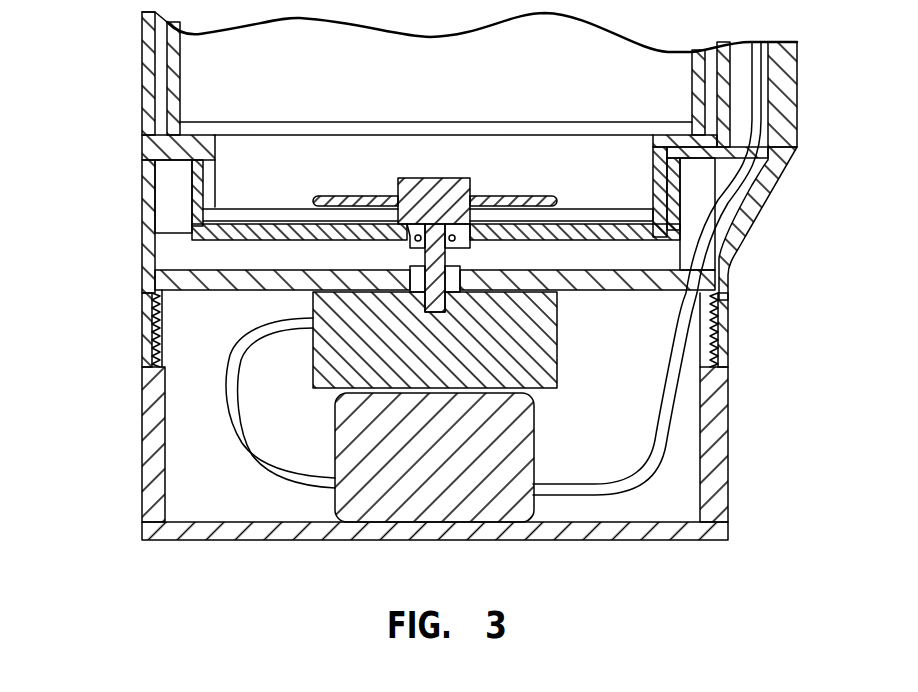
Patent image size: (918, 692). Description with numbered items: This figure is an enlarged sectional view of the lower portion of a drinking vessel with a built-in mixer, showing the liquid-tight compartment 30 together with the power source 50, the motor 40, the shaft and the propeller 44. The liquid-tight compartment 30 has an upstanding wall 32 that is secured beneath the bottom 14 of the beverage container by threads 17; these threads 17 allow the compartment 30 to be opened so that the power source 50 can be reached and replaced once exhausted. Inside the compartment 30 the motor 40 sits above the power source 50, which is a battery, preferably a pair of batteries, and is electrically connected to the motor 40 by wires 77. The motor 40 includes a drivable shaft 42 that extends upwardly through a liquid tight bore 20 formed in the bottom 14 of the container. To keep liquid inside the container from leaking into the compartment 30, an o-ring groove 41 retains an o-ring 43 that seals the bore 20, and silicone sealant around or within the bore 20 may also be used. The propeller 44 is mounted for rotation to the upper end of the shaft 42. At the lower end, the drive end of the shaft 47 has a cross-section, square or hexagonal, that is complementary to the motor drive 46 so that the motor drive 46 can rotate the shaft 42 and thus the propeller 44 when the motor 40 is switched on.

The bottom 14 is at (248, 221).
The threads 17 is at (720, 333).
The liquid tight bore 20 is at (452, 178).
The liquid tight compartment 30 is at (678, 489).
The upstanding wall 32 is at (142, 402).
The motor 40 is at (557, 351).
The o-ring groove 41 is at (478, 232).
The drivable shaft 42 is at (402, 240).
The o-ring 43 is at (470, 243).
The propeller 44 is at (365, 196).
The motor drive 46 is at (410, 276).
The drive end of the shaft 47 is at (557, 310).
The power source 50 is at (335, 506).
The wires 77 is at (660, 434).